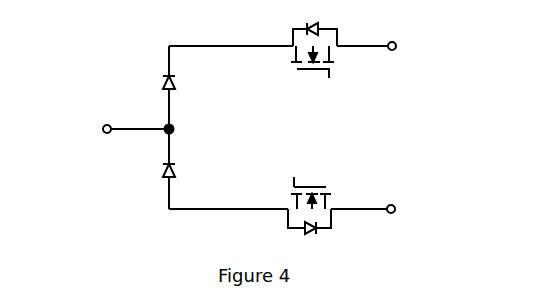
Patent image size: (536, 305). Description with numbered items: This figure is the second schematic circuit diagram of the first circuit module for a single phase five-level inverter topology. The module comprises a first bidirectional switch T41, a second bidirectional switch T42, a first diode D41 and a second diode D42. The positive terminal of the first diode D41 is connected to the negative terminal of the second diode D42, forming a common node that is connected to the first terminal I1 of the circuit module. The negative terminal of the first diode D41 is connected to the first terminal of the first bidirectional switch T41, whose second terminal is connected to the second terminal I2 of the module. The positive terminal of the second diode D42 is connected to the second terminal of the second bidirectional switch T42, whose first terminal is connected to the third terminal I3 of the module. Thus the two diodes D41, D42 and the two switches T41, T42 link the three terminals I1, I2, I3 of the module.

The first terminal I1 is at (126, 132).
The second terminal I2 is at (407, 50).
The third terminal I3 is at (405, 213).
The first diode D41 is at (194, 86).
The second diode D42 is at (194, 178).
The first bidirectional switch T41 is at (318, 70).
The second bidirectional switch T42 is at (310, 186).